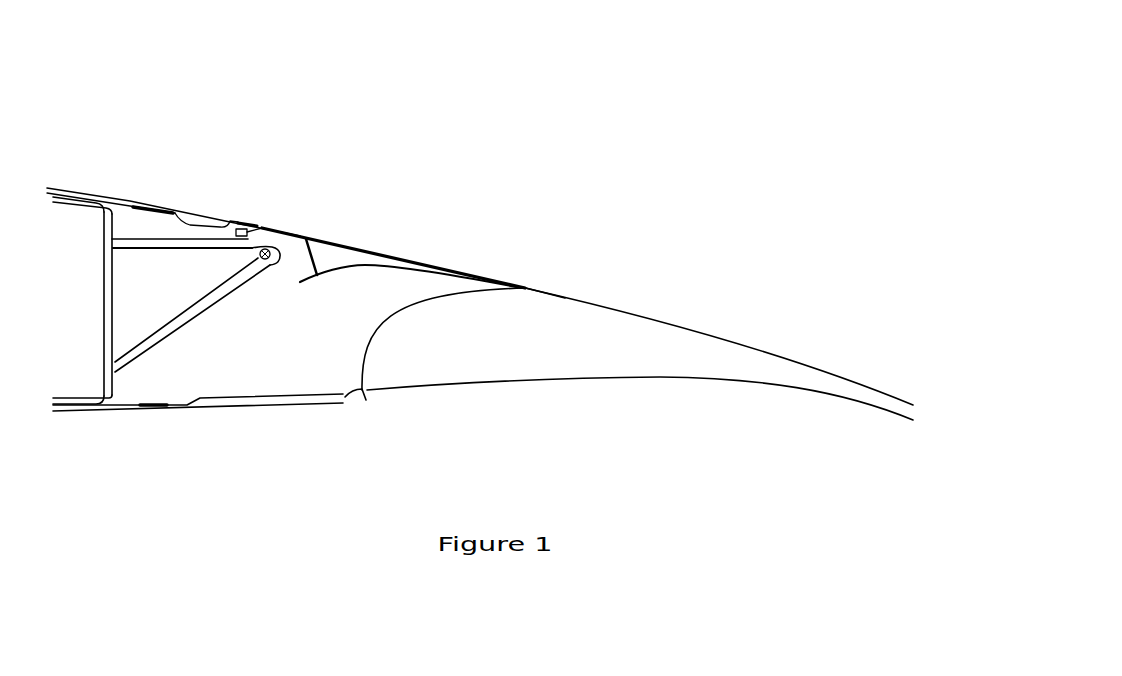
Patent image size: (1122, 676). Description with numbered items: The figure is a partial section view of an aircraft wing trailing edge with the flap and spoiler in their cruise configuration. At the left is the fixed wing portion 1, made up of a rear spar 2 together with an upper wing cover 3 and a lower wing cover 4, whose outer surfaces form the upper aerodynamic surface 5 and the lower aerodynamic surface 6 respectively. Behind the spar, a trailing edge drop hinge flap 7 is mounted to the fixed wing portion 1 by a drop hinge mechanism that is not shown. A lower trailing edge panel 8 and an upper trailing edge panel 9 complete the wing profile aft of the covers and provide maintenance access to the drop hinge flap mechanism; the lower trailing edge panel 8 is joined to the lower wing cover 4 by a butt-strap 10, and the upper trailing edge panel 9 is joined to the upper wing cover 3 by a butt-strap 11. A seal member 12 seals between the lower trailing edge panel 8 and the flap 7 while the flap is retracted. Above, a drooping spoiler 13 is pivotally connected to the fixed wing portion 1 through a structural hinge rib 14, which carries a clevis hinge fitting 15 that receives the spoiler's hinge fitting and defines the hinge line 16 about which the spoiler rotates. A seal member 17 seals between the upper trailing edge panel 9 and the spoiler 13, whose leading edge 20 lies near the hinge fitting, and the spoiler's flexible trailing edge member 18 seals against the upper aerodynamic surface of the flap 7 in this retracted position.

The fixed wing portion 1 is at (100, 122).
The rear spar 2 is at (102, 278).
The upper wing cover 3 is at (125, 199).
The lower wing cover 4 is at (115, 410).
The upper aerodynamic surface 5 is at (82, 190).
The lower aerodynamic surface 6 is at (77, 413).
The trailing edge drop hinge flap 7 is at (622, 337).
The lower trailing edge panel 8 is at (243, 393).
The upper trailing edge panel 9 is at (207, 216).
The butt-strap 10 is at (150, 408).
The butt-strap 11 is at (155, 207).
The seal member 12 is at (352, 400).
The drooping spoiler 13 is at (365, 258).
The structural hinge rib 14 is at (234, 285).
The clevis hinge fitting 15 is at (260, 265).
The hinge line 16 is at (285, 232).
The seal member 17 is at (243, 223).
The flexible trailing edge member 18 is at (538, 292).
The leading edge 20 is at (262, 228).